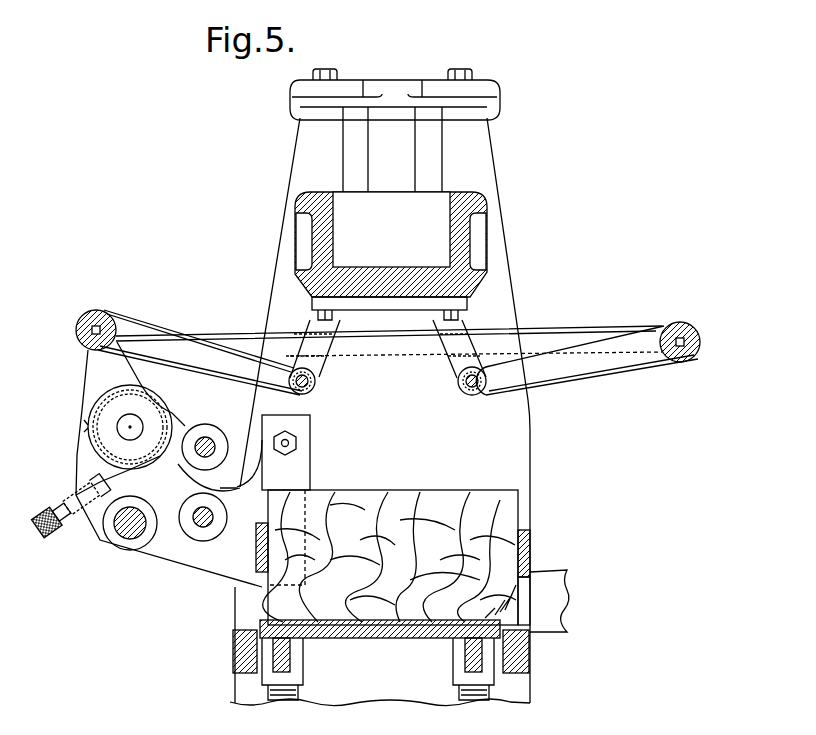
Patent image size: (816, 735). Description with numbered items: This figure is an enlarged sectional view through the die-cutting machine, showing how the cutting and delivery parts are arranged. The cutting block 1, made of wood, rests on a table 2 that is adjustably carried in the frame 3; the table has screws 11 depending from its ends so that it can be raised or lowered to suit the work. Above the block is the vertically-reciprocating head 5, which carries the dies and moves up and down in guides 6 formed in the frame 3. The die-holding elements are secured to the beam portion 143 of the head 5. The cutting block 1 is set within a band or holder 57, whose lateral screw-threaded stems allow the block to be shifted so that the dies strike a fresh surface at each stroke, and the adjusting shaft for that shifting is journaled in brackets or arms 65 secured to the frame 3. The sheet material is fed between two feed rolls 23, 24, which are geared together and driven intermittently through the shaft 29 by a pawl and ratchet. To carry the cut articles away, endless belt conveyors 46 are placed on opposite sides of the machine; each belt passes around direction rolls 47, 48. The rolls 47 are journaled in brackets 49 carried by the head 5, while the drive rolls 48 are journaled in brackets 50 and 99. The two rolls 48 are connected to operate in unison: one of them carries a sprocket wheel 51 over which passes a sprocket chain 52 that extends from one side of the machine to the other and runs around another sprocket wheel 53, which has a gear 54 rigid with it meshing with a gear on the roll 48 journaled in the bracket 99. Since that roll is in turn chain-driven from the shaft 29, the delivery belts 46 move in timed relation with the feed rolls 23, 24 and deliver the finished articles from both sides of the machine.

The cutting block 1 is at (492, 488).
The table 2 is at (428, 640).
The frame 3 is at (252, 600).
The vertically-reciprocating head 5 is at (482, 210).
The guides 6 is at (440, 163).
The screws 11 is at (268, 698).
The feed roll 23 is at (206, 425).
The feed roll 24 is at (194, 545).
The shaft 29 is at (124, 540).
The endless belt conveyors 46 is at (176, 333).
The direction rolls 47 is at (312, 388).
The direction rolls 48 is at (76, 331).
The brackets 49 is at (305, 330).
The bracket 50 is at (612, 365).
The sprocket wheel 51 is at (692, 328).
The sprocket chain 52 is at (596, 330).
The sprocket wheel 53 is at (128, 361).
The gear 54 is at (118, 330).
The band or holder 57 is at (534, 548).
The brackets or arms 65 is at (560, 595).
The bracket 99 is at (98, 376).
The beam portion 143 is at (394, 270).